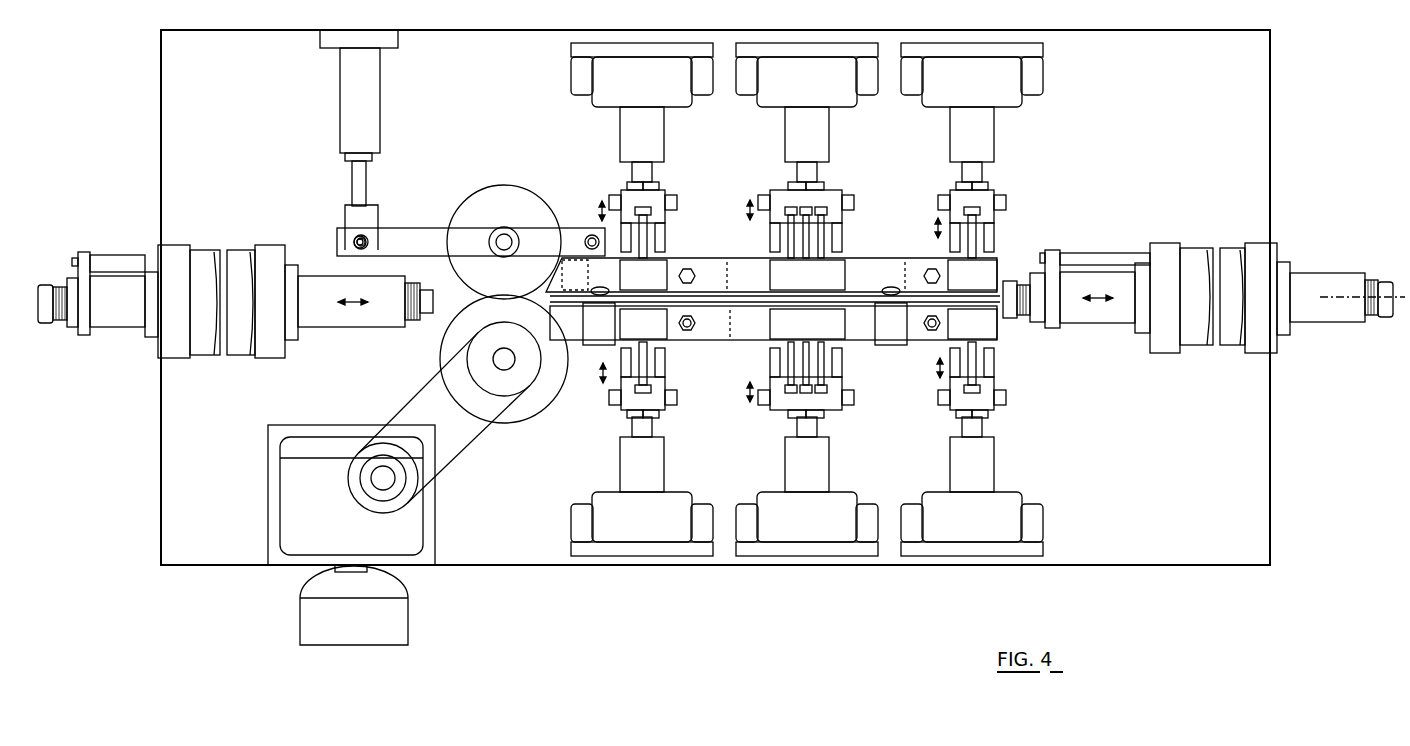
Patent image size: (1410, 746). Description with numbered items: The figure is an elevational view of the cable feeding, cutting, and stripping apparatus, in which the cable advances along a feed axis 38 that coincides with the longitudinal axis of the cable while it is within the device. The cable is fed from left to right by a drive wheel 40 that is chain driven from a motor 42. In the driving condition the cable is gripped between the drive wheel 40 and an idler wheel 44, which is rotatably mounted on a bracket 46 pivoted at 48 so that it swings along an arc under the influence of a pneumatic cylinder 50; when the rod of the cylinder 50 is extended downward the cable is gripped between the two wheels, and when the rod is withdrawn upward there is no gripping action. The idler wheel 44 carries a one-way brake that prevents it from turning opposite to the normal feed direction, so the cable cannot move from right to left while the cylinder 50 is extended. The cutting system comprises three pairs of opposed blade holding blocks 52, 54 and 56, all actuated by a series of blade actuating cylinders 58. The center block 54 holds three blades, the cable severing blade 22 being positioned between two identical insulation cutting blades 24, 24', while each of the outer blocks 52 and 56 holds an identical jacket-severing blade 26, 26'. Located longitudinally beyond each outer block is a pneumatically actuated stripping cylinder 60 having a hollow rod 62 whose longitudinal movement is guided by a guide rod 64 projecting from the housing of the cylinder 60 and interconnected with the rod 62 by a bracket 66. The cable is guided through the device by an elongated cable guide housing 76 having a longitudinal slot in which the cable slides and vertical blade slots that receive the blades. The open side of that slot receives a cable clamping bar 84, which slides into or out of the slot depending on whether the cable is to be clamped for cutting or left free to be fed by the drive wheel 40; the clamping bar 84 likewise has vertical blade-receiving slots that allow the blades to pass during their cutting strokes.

The cable severing blade 22 is at (810, 236).
The insulation cutting blade 24 is at (847, 300).
The insulation cutting blade 24' is at (765, 300).
The jacket-severing blade 26 is at (997, 300).
The jacket-severing blade 26' is at (671, 300).
The feed axis 38 is at (47, 305).
The drive wheel 40 is at (503, 424).
The motor 42 is at (323, 511).
The idler wheel 44 is at (482, 198).
The bracket 46 is at (412, 228).
The pivot 48 is at (590, 236).
The pneumatic cylinder 50 is at (343, 107).
The blade holding block 52 is at (659, 196).
The center blade holding block 54 is at (832, 195).
The blade holding block 56 is at (990, 195).
The blade actuating cylinder 58 is at (654, 85).
The stripping cylinder 60 is at (206, 246).
The hollow rod 62 is at (128, 320).
The guide rod 64 is at (129, 255).
The bracket 66 is at (84, 252).
The cable guide housing 76 is at (765, 334).
The cable clamping bar 84 is at (860, 300).